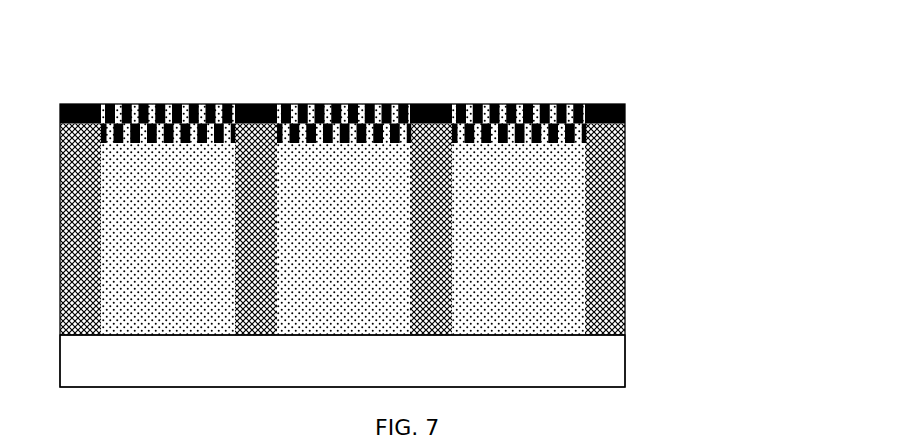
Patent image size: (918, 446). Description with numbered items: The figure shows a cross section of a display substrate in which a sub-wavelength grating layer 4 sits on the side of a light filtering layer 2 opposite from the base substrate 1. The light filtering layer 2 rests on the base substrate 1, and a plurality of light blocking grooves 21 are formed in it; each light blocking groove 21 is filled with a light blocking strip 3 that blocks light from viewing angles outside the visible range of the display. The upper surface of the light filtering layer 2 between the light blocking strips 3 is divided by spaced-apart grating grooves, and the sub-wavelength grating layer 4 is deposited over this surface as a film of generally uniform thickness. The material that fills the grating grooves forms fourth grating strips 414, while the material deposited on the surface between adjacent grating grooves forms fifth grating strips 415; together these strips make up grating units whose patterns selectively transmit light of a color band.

The base substrate 1 is at (625, 367).
The light filtering layer 2 is at (545, 293).
The light blocking groove 21 is at (625, 210).
The light blocking strip 3 is at (411, 168).
The sub-wavelength grating layer 4 is at (390, 76).
The fourth grating strip 414 is at (508, 138).
The fifth grating strip 415 is at (472, 104).